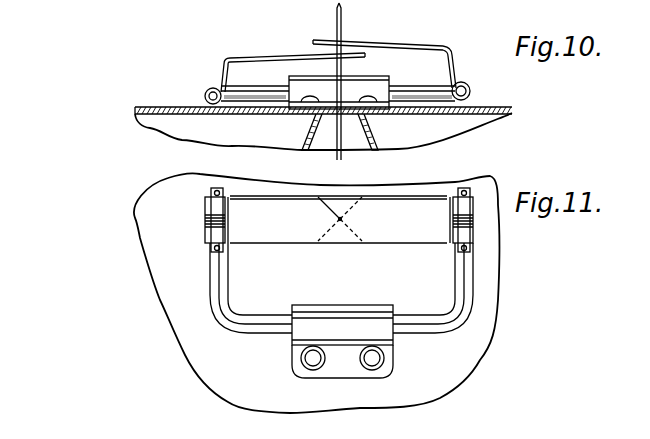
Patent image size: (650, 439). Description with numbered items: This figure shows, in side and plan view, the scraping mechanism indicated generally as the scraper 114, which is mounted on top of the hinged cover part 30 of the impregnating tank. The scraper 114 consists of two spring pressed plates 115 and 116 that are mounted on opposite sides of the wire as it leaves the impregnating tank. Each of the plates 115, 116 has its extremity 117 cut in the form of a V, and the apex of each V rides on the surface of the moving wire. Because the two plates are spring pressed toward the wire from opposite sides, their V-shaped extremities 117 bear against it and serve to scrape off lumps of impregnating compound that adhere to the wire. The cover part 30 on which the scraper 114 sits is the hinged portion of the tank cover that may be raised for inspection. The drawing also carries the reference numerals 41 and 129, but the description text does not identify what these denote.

In FIG. 10, the part of the cover 30 is at (165, 106).
In FIG. 11, the part of the cover 30 is at (160, 218).
In FIG. 10, the rod 41 is at (344, 28).
In FIG. 11, the rod 41 is at (331, 244).
In FIG. 10, the scraper 114 is at (337, 76).
In FIG. 11, the scraper 114 is at (240, 340).
In FIG. 10, the spring pressed plate 115 is at (398, 45).
In FIG. 11, the spring pressed plate 115 is at (399, 226).
In FIG. 10, the spring pressed plate 116 is at (256, 56).
In FIG. 11, the spring pressed plate 116 is at (276, 228).
In FIG. 11, the V-shaped extremities 117 is at (342, 217).
In FIG. 10, the lever 129 is at (471, 6).